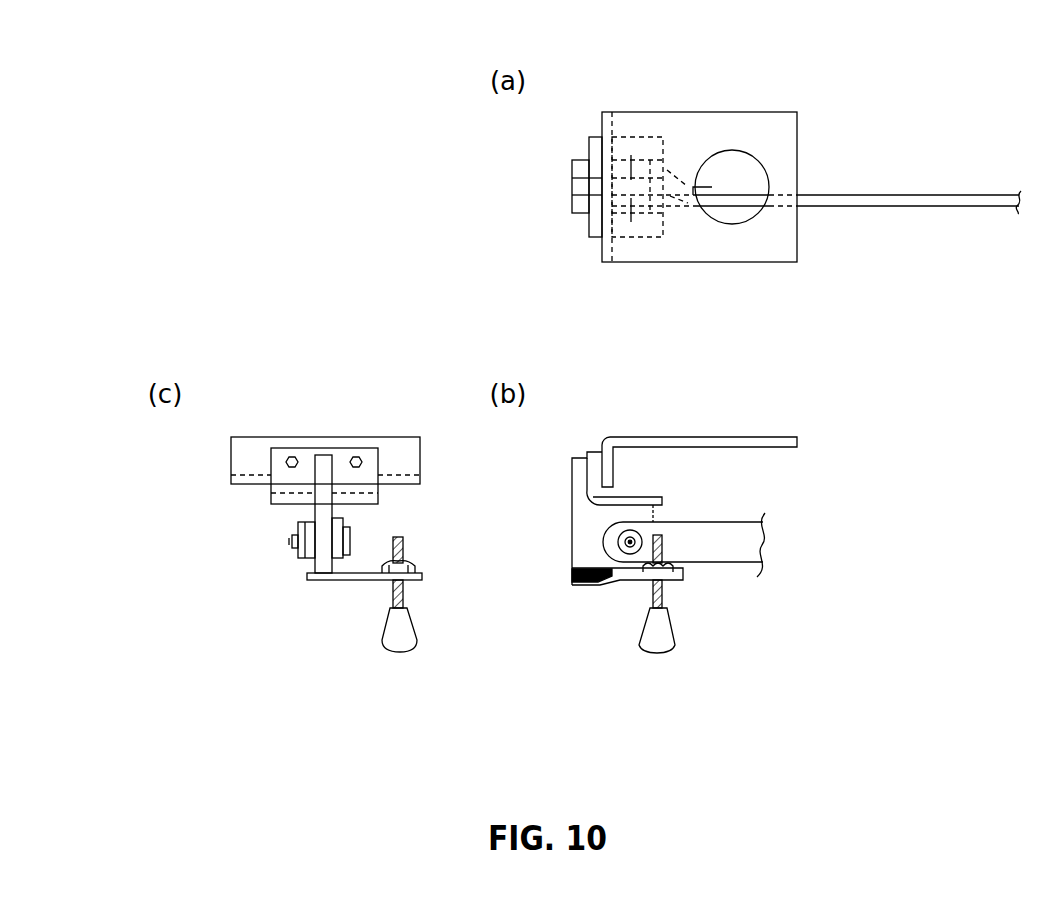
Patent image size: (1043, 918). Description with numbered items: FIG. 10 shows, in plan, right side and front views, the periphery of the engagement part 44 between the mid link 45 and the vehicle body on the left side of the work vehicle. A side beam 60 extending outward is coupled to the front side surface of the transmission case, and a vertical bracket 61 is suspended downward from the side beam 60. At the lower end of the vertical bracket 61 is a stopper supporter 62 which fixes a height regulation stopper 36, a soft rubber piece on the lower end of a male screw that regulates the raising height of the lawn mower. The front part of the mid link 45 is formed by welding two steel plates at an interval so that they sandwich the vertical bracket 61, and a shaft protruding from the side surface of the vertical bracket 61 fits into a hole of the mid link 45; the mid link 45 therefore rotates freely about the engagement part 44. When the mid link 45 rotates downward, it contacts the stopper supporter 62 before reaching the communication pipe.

The height regulation stopper 36 is at (662, 643).
The engagement part 44 is at (627, 213).
The mid link 45 is at (668, 168).
The side beam 60 is at (760, 125).
The vertical bracket 61 is at (570, 188).
The stopper supporter 62 is at (572, 168).